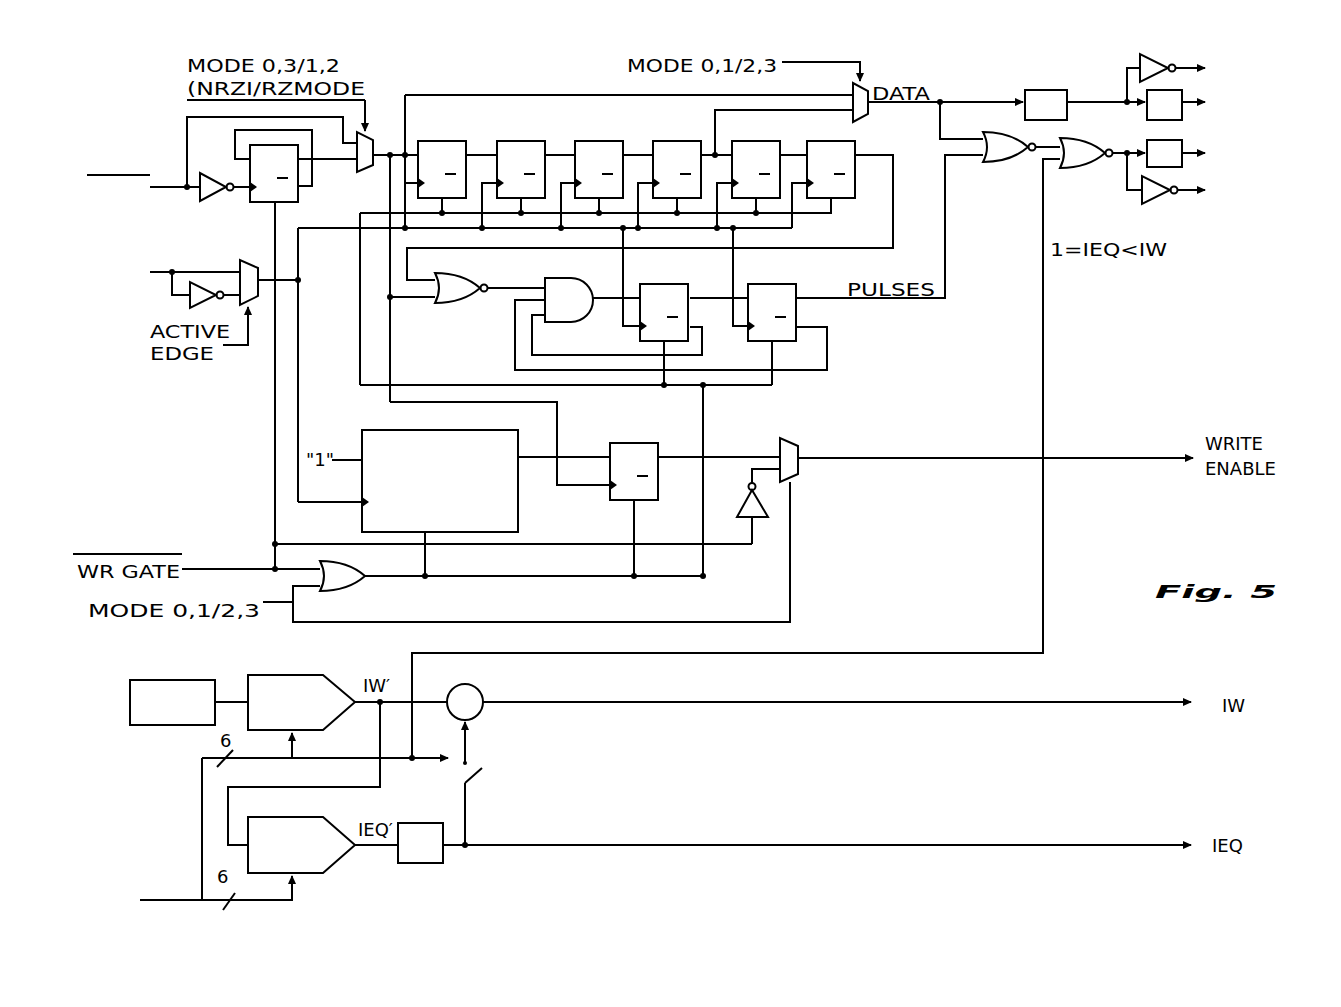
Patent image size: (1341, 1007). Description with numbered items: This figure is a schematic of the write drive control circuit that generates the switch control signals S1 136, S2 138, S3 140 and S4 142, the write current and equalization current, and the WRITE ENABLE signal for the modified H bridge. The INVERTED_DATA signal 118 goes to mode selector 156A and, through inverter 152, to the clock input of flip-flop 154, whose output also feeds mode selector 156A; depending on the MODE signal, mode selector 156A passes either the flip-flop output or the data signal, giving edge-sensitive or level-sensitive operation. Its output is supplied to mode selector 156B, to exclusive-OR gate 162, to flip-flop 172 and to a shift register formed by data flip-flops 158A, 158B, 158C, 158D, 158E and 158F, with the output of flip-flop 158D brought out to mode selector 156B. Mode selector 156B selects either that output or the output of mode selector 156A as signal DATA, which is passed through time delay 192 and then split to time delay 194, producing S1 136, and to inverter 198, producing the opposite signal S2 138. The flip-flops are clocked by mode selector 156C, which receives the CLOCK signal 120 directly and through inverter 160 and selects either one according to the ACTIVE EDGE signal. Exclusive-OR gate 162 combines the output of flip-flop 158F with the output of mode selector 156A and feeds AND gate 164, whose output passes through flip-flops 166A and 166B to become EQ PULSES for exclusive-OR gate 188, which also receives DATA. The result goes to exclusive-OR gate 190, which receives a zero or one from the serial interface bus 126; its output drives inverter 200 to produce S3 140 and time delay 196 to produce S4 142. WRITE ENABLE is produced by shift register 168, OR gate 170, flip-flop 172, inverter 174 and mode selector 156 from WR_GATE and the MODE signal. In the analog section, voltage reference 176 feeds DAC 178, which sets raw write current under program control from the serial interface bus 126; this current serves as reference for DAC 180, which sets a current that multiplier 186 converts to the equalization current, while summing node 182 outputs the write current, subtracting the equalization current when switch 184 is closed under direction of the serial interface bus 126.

The INVERTED_DATA signal 118 is at (143, 161).
The CLOCK signal 120 is at (158, 261).
The serial interface bus 126 is at (133, 892).
The signal S1 136 is at (1263, 102).
The signal S2 138 is at (1265, 69).
The signal S3 140 is at (1252, 187).
The signal S4 142 is at (1257, 151).
The inverter 152 is at (188, 204).
The flip-flop 154 is at (256, 180).
The mode selector 156 is at (986, 445).
The mode selector 156A is at (358, 173).
The mode selector 156B is at (938, 110).
The mode selector 156C is at (258, 268).
The data flip-flop 158A is at (435, 152).
The data flip-flop 158B is at (521, 152).
The data flip-flop 158C is at (599, 152).
The data flip-flop 158D is at (677, 152).
The data flip-flop 158E is at (775, 157).
The data flip-flop 158F is at (845, 194).
The inverter 160 is at (170, 303).
The exclusive-OR gate 162 is at (485, 316).
The AND gate 164 is at (592, 288).
The flip-flop 166A is at (679, 300).
The flip-flop 166B is at (797, 300).
The shift register 168 is at (414, 463).
The OR gate 170 is at (511, 585).
The flip-flop 172 is at (634, 450).
The inverter 174 is at (757, 520).
The voltage reference 176 is at (171, 679).
The digital-to-analog converter 178 is at (301, 682).
The digital-to-analog converter 180 is at (316, 867).
The summing node 182 is at (813, 695).
The switch 184 is at (505, 783).
The multiplier 186 is at (428, 870).
The exclusive-OR gate 188 is at (1010, 177).
The exclusive-OR gate 190 is at (1102, 180).
The time delay 192 is at (1056, 87).
The time delay 194 is at (1146, 113).
The time delay 196 is at (1198, 144).
The inverter 198 is at (1133, 76).
The inverter 200 is at (1182, 196).